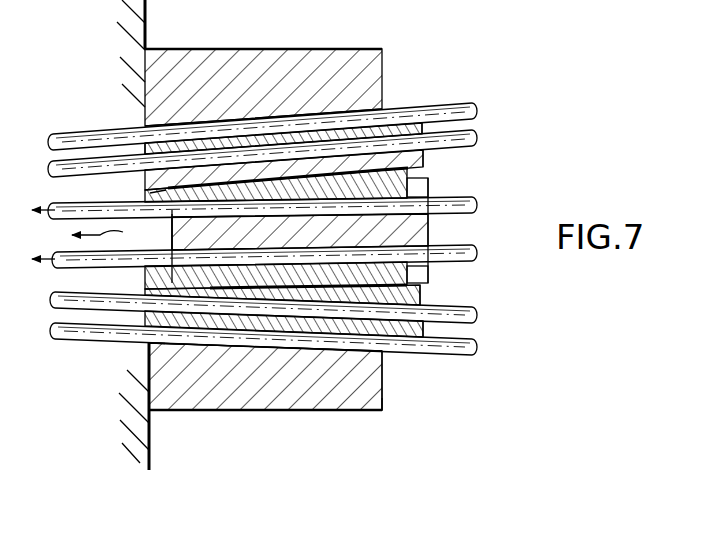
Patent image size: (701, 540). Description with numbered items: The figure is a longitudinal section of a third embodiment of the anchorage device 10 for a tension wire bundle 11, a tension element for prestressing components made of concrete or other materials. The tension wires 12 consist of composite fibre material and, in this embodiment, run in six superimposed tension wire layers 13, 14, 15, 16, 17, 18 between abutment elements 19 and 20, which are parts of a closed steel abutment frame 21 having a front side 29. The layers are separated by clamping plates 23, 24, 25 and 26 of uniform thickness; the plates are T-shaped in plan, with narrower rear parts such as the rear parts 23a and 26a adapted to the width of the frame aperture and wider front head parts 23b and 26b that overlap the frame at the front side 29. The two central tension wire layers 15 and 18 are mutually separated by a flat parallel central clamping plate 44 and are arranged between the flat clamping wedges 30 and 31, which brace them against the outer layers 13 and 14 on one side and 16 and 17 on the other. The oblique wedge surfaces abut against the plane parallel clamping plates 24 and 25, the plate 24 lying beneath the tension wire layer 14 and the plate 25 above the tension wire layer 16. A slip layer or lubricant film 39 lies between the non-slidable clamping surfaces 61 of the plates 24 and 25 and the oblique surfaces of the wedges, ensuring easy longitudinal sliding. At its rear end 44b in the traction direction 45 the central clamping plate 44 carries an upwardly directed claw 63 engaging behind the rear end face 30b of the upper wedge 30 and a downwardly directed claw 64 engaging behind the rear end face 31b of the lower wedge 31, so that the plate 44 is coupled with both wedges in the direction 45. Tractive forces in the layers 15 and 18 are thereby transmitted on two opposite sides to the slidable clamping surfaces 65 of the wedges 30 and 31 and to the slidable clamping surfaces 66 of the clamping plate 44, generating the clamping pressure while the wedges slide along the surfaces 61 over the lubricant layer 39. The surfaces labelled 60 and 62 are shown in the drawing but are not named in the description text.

The anchorage device 10 is at (366, 419).
The tension wire bundle 11 is at (103, 78).
The tension wires 12 is at (78, 137).
The tension wire layer 13 is at (478, 108).
The tension wire layer 14 is at (478, 138).
The tension wire layer 15 is at (478, 204).
The tension wire layer 16 is at (478, 318).
The tension wire layer 17 is at (478, 352).
The tension wire layer 18 is at (474, 256).
The abutment element 19 is at (178, 72).
The abutment element 20 is at (213, 403).
The abutment frame 21 is at (168, 443).
The clamping plate 23 is at (331, 133).
The rear part 23a is at (130, 147).
The head part 23b is at (411, 123).
The clamping plate 24 is at (426, 156).
The clamping plate 25 is at (425, 300).
The clamping plate 26 is at (393, 352).
The rear part 26a is at (88, 345).
The head part 26b is at (432, 328).
The front side 29 is at (383, 409).
The clamping wedge 30 is at (351, 176).
The rear end face 30b is at (430, 170).
The clamping wedge 31 is at (340, 287).
The rear end face 31b is at (408, 285).
The lubricant film 39 is at (125, 387).
The central clamping plate 44 is at (137, 350).
The rear end 44b is at (415, 237).
The traction direction 45 is at (112, 233).
The first separating finger 60 is at (233, 140).
The non-slidable clamping surfaces 61 is at (283, 172).
The groove surface 62 is at (285, 117).
The upper claw 63 is at (431, 189).
The lower claw 64 is at (427, 281).
The slidable clamping surfaces 65 is at (220, 203).
The slidable clamping surfaces 66 is at (190, 238).